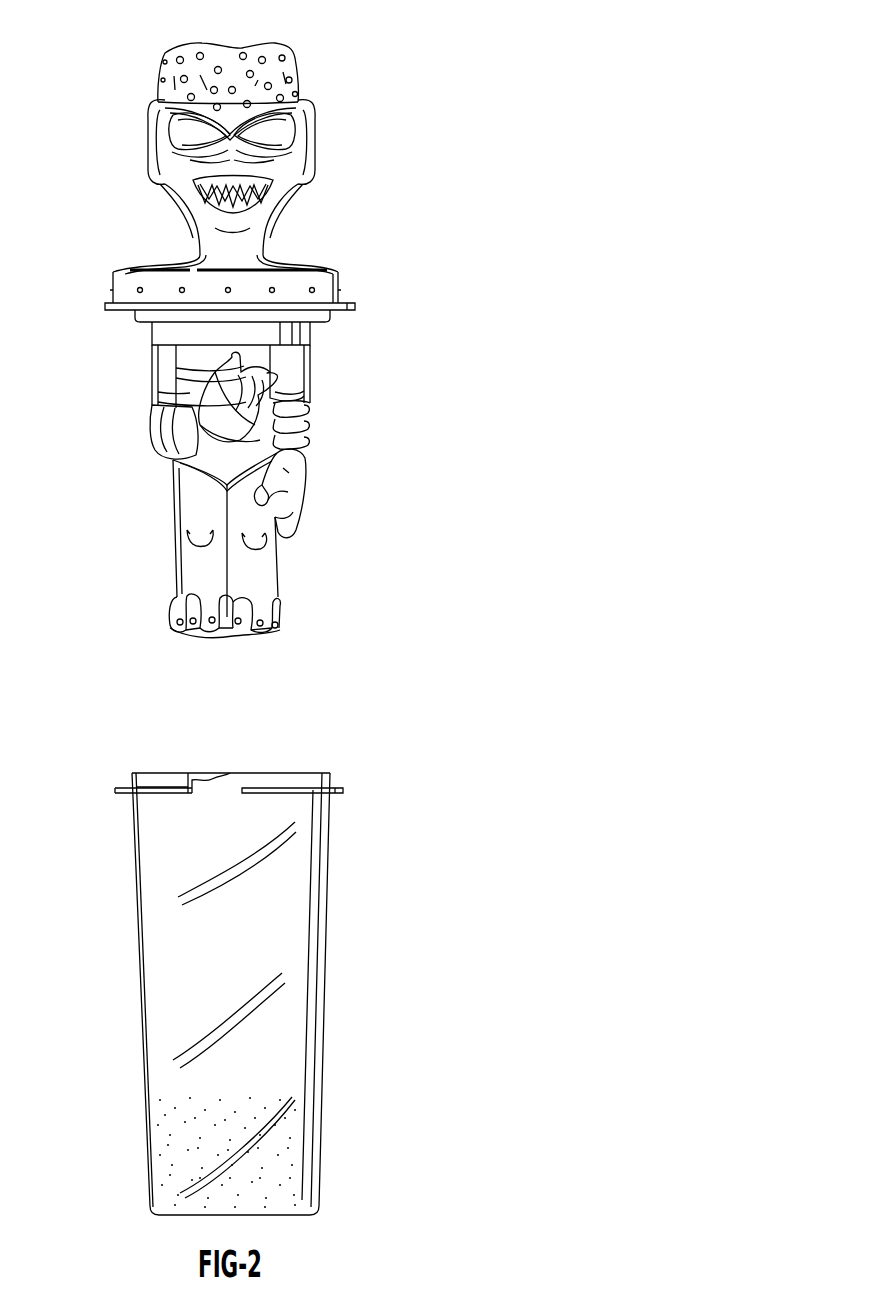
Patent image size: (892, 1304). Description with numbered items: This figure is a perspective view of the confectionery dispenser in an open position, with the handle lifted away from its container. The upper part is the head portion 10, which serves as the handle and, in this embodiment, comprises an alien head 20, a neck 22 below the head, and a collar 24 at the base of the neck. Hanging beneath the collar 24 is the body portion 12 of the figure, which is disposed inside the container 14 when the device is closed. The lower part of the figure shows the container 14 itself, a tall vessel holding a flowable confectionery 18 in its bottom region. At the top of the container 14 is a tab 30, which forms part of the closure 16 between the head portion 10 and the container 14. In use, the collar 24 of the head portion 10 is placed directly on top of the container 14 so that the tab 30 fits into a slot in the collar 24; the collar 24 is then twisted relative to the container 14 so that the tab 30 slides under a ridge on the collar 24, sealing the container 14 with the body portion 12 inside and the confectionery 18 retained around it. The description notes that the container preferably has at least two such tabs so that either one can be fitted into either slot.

The head portion 10 is at (447, 79).
The body portion 12 is at (308, 377).
The container 14 is at (330, 933).
The closure 16 is at (345, 792).
The confectionery 18 is at (178, 1140).
The alien head 20 is at (163, 72).
The neck 22 is at (268, 238).
The collar 24 is at (110, 278).
The tab 30 is at (197, 773).